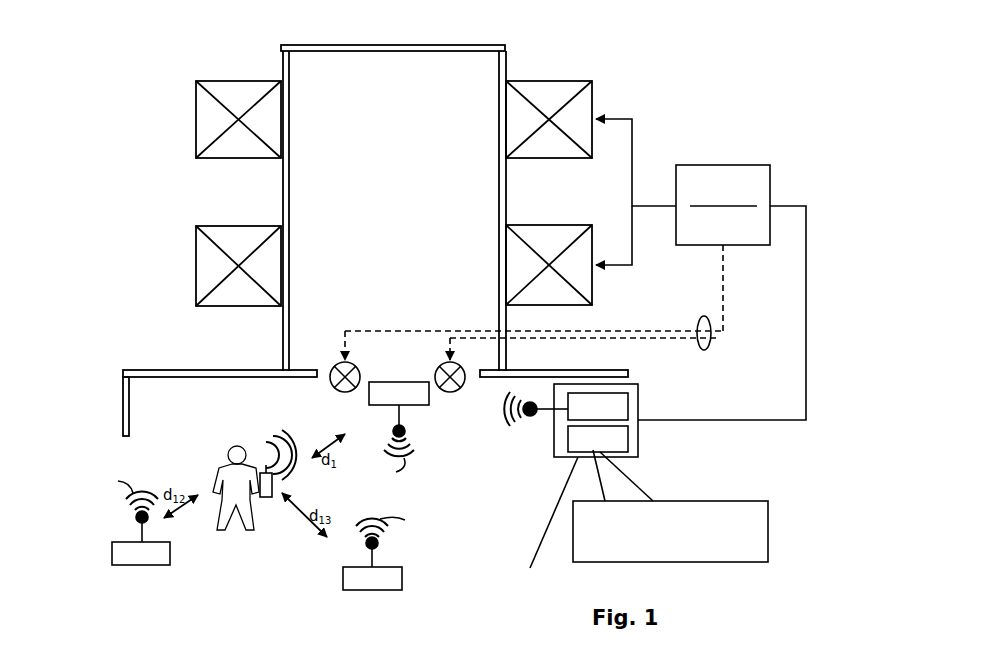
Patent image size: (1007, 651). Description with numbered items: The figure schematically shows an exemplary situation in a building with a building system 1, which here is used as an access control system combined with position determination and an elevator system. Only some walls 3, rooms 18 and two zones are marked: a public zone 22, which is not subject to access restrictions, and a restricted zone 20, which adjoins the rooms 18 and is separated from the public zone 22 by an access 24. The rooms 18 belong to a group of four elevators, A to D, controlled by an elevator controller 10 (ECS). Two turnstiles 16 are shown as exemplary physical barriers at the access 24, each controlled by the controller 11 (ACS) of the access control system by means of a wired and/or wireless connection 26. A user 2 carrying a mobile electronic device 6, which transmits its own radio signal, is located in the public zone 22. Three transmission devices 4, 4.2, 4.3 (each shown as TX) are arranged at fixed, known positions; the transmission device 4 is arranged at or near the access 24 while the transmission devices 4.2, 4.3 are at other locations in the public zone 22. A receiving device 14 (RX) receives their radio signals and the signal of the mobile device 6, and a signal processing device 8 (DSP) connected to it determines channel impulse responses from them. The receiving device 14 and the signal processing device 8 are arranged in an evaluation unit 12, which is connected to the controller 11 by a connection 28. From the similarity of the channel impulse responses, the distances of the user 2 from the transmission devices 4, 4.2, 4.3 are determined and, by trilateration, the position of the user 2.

The building system 1 is at (692, 447).
The user 2 is at (228, 451).
The wall 3 is at (131, 392).
The transmission device 4 is at (412, 405).
The transmission device 4.2 is at (172, 552).
The transmission device 4.3 is at (402, 575).
The mobile electronic device 6 is at (267, 498).
The signal processing device 8 is at (628, 437).
The elevator controller 10 is at (697, 178).
The controller 11 is at (740, 235).
The evaluation unit 12 is at (634, 489).
The receiving device 14 is at (628, 406).
The turnstile 16 is at (334, 388).
The room 18 is at (196, 124).
The restricted zone 20 is at (408, 222).
The public zone 22 is at (470, 486).
The access 24 is at (333, 362).
The connection 26 is at (708, 345).
The connection 28 is at (755, 421).